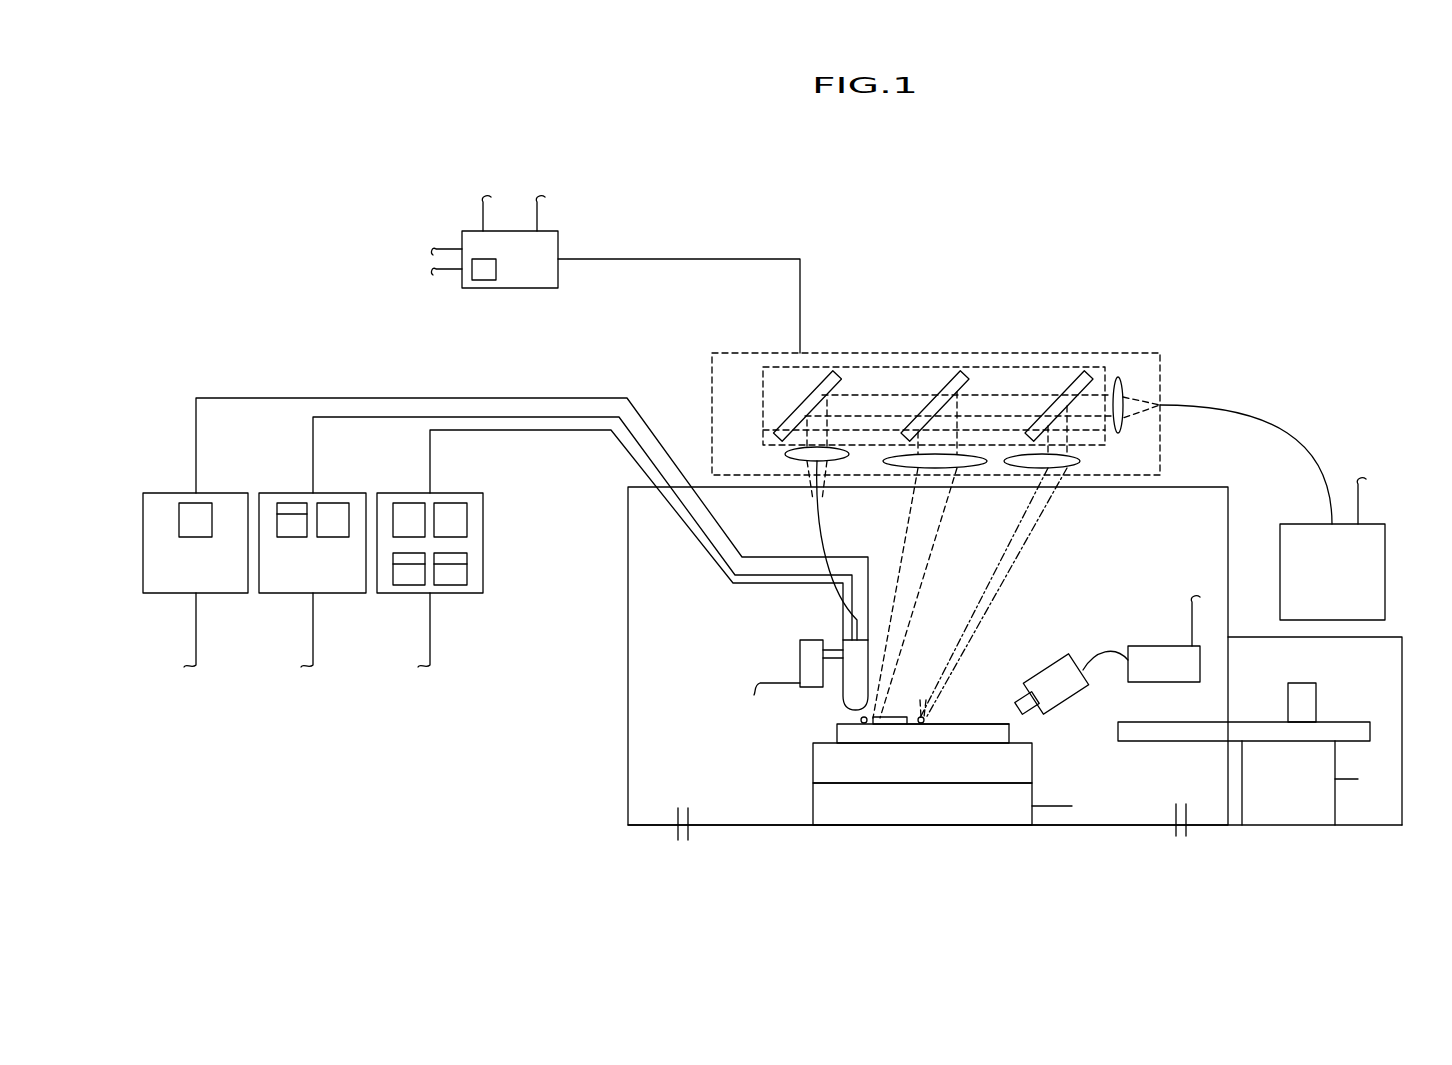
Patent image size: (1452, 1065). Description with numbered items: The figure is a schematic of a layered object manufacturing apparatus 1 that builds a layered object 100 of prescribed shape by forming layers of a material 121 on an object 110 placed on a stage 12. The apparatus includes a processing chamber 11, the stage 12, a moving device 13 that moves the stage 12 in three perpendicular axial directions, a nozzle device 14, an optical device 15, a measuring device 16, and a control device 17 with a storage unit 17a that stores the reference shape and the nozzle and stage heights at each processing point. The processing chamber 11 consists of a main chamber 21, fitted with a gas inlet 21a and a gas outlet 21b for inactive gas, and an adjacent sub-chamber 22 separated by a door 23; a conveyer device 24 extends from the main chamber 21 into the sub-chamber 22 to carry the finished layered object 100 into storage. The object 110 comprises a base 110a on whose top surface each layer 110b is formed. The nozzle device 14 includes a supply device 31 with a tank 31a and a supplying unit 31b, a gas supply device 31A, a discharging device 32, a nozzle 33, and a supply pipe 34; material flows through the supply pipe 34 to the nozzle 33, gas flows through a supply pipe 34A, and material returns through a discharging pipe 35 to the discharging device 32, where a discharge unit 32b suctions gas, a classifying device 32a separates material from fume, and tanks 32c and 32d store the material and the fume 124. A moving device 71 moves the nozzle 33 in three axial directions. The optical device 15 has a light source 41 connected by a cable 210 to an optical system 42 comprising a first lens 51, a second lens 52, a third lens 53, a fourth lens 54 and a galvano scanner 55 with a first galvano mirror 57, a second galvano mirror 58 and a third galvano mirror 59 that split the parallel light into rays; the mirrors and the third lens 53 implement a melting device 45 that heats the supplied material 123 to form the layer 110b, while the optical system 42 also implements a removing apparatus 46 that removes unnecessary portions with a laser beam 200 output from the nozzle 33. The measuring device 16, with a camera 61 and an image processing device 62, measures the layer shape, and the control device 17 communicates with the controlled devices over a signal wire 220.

The layered object manufacturing apparatus 1 is at (1080, 283).
The processing chamber 11 is at (626, 522).
The stage 12 is at (813, 762).
The moving device 13 is at (813, 805).
The nozzle device 14 is at (532, 489).
The optical device 15 is at (1197, 352).
The measuring device 16 is at (1153, 600).
The control device 17 is at (558, 243).
The storage unit 17a is at (485, 281).
The main chamber 21 is at (1085, 825).
The gas inlet 21a is at (678, 825).
The gas outlet 21b is at (1190, 825).
The sub-chamber 22 is at (1385, 825).
The door 23 is at (1230, 662).
The conveyer device 24 is at (1335, 805).
The supply device 31A is at (173, 493).
The supply device 31 is at (345, 493).
The tank 31a is at (287, 503).
The supplying unit 31b is at (195, 537).
The discharging device 32 is at (483, 545).
The classifying device 32a is at (404, 503).
The discharge unit 32b is at (452, 503).
The tank 32c is at (412, 586).
The tank 32d is at (455, 568).
The nozzle 33 is at (843, 650).
The supply pipe 34 is at (382, 417).
The supply pipe 34A is at (288, 398).
The discharging pipe 35 is at (538, 427).
The light source 41 is at (1385, 567).
The optical system 42 is at (1027, 353).
The melting device 45 is at (968, 482).
The removing apparatus 46 is at (1070, 482).
The first lens 51 is at (1117, 376).
The second lens 52 is at (800, 461).
The third lens 53 is at (937, 468).
The fourth lens 54 is at (1044, 468).
The galvano scanner 55 is at (987, 367).
The first galvano mirror 57 is at (1067, 374).
The second galvano mirror 58 is at (942, 374).
The third galvano mirror 59 is at (815, 374).
The camera 61 is at (1052, 654).
The image processing device 62 is at (1170, 685).
The moving device 71 is at (800, 654).
The layered object 100 is at (1316, 700).
The object 110 is at (997, 723).
The base 110a is at (956, 723).
The layer 110b is at (902, 716).
The material 121 is at (284, 525).
The material 123 is at (860, 720).
The fume 124 is at (458, 575).
The laser beam 200 is at (876, 395).
The cable 210 is at (1284, 419).
The signal wire 220 is at (481, 218).